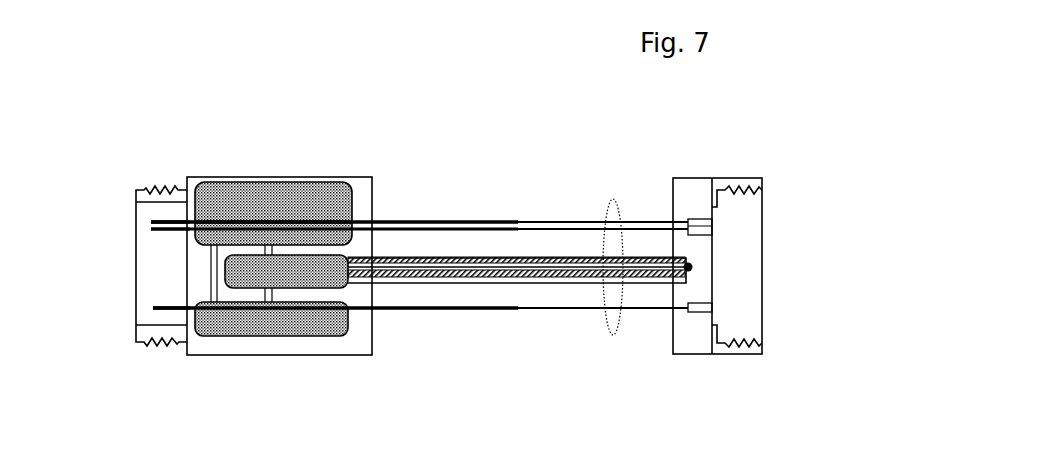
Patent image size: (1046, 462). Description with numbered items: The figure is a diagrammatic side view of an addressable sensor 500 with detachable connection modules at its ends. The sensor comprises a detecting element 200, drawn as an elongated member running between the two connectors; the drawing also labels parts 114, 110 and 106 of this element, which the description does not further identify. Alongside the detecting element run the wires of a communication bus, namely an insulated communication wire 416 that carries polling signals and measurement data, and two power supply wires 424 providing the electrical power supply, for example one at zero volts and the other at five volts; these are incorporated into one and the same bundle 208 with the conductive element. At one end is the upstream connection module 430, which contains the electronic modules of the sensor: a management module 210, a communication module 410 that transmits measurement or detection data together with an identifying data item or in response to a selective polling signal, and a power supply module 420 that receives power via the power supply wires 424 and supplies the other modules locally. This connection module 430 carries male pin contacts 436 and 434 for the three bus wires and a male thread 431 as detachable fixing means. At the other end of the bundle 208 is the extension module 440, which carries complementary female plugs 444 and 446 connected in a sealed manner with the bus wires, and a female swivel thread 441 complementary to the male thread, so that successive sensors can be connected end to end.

The addressable sensor 500 is at (264, 64).
The detecting element 200 is at (402, 112).
The management module 210 is at (318, 225).
The outer sheath 114 is at (452, 88).
The insulation layer 110 is at (455, 88).
The inner conductor 106 is at (460, 88).
The power supply wires 424 is at (574, 219).
The communication wire 416 is at (465, 312).
The power supply module 420 is at (225, 183).
The communication module 410 is at (243, 327).
The upstream connection module 430 is at (188, 173).
The male thread 431 is at (158, 188).
The male pin contact 434 is at (158, 238).
The male pin contact 436 is at (160, 316).
The extension module 440 is at (687, 197).
The female swivel thread 441 is at (760, 200).
The female plug 444 is at (716, 225).
The female plug 446 is at (712, 305).
The bundle 208 is at (613, 333).